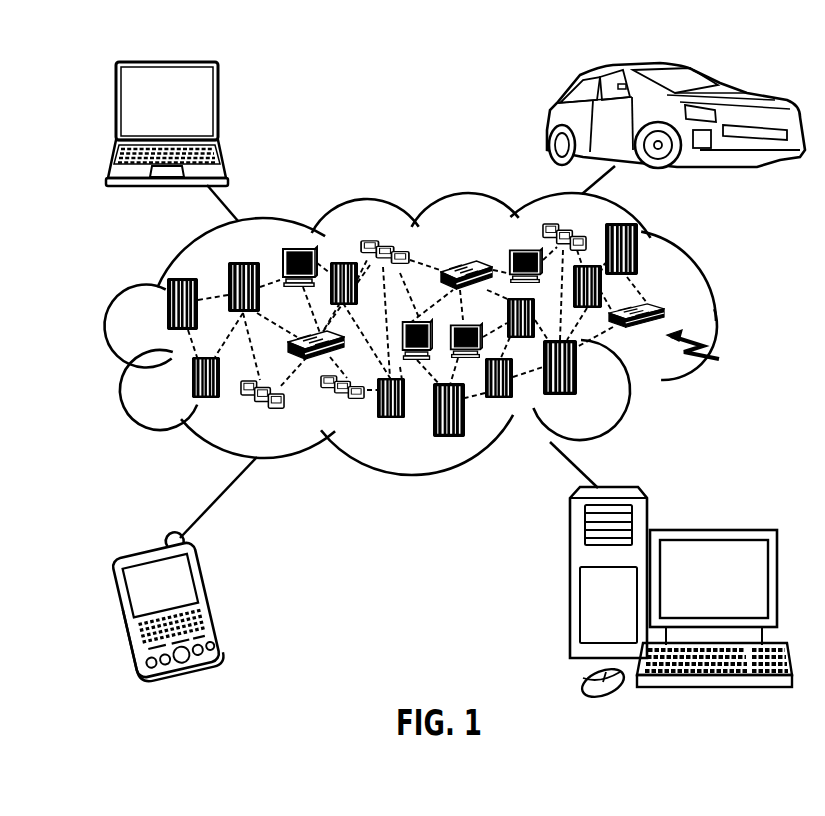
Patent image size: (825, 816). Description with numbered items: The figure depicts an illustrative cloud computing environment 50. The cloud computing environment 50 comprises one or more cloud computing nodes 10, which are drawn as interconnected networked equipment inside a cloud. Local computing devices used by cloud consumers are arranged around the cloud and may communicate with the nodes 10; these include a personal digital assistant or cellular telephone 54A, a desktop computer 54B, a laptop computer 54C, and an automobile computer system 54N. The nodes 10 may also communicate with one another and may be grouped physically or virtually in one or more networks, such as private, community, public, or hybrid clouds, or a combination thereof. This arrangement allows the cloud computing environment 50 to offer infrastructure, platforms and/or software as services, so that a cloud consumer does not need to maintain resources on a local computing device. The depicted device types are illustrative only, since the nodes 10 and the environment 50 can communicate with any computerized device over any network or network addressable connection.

The cloud computing nodes 10 is at (706, 350).
The cloud computing environment 50 is at (714, 313).
The personal digital assistant or cellular telephone 54A is at (211, 602).
The desktop computer 54B is at (712, 528).
The laptop computer 54C is at (220, 108).
The automobile computer system 54N is at (548, 119).